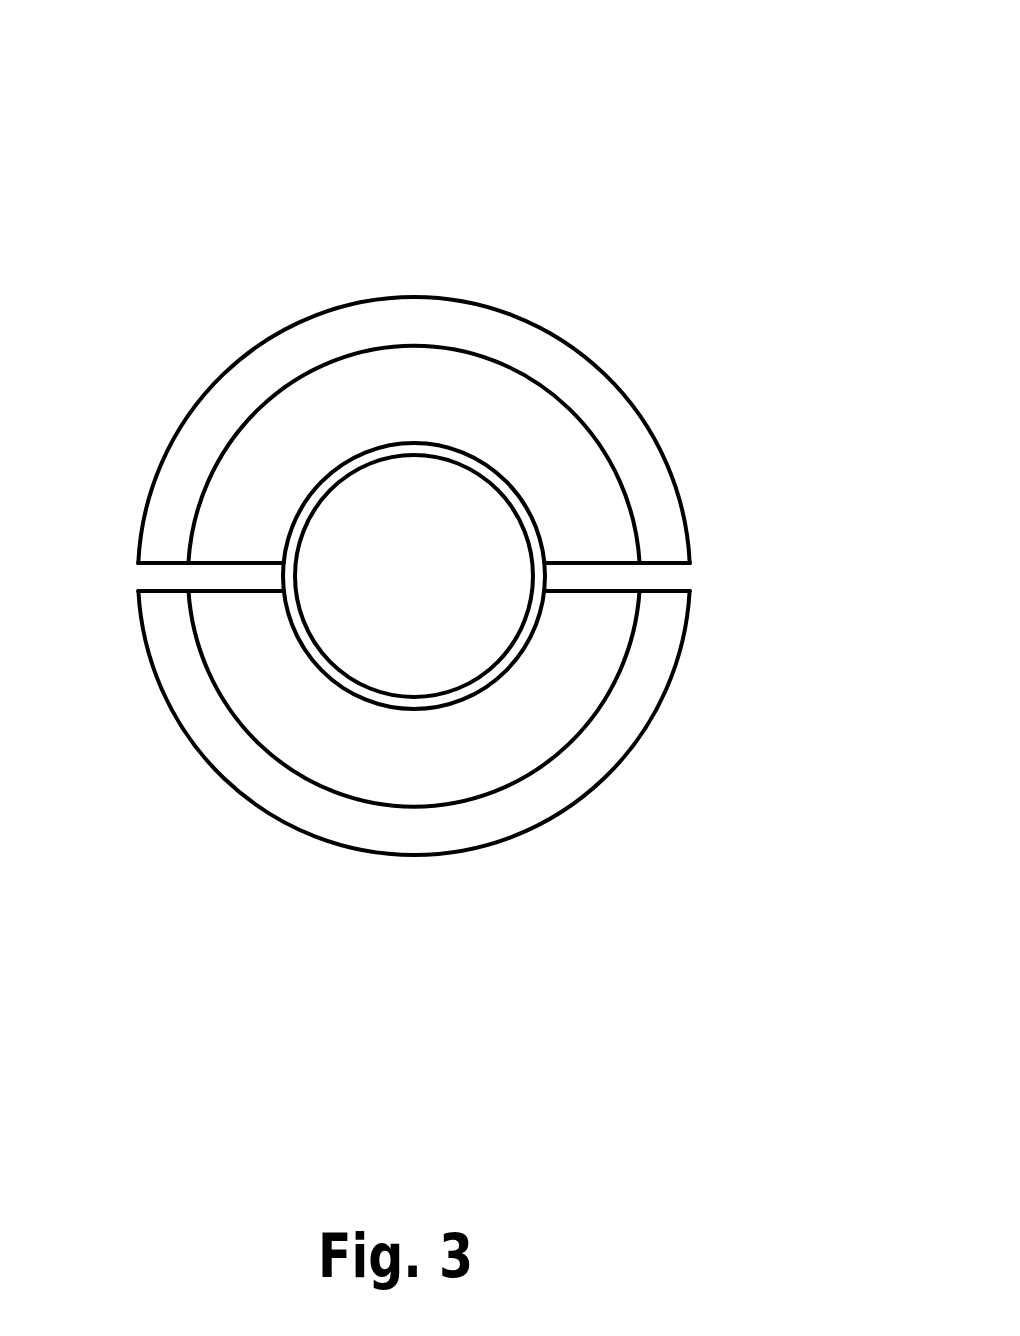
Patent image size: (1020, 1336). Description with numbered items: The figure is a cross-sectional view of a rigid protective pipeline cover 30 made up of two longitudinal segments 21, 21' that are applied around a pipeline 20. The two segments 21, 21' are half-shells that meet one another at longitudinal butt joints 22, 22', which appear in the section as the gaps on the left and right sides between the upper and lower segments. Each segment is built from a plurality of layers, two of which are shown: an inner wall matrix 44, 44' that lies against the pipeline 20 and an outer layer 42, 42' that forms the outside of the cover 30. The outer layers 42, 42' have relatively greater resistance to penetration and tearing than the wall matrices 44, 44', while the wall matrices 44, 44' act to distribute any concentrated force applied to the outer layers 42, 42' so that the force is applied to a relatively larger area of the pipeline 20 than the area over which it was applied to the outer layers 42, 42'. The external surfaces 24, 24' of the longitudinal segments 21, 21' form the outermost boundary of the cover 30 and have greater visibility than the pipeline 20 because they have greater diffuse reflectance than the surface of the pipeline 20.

The pipeline 20 is at (461, 466).
The longitudinal segment 21 is at (453, 402).
The longitudinal segment 21' is at (377, 738).
The longitudinal butt joint 22 is at (156, 565).
The longitudinal butt joint 22' is at (679, 564).
The external surface 24 is at (413, 430).
The external surface 24' is at (413, 736).
The rigid protective pipeline cover 30 is at (620, 150).
The outer layer 42 is at (472, 454).
The outer layer 42' is at (354, 699).
The wall matrix 44 is at (453, 509).
The wall matrix 44' is at (369, 640).